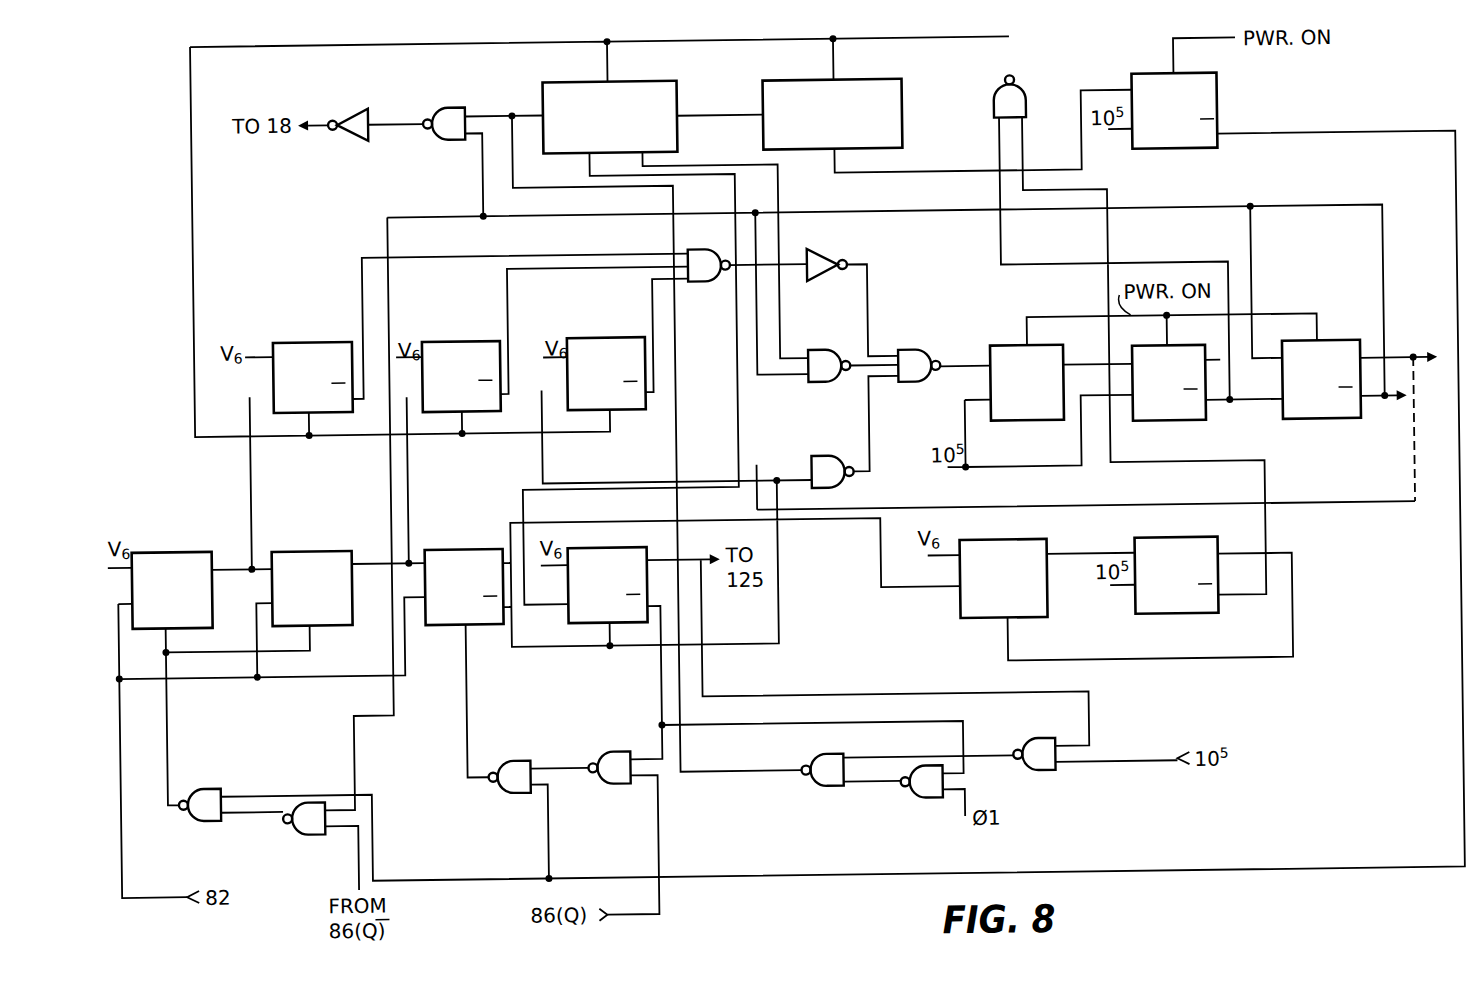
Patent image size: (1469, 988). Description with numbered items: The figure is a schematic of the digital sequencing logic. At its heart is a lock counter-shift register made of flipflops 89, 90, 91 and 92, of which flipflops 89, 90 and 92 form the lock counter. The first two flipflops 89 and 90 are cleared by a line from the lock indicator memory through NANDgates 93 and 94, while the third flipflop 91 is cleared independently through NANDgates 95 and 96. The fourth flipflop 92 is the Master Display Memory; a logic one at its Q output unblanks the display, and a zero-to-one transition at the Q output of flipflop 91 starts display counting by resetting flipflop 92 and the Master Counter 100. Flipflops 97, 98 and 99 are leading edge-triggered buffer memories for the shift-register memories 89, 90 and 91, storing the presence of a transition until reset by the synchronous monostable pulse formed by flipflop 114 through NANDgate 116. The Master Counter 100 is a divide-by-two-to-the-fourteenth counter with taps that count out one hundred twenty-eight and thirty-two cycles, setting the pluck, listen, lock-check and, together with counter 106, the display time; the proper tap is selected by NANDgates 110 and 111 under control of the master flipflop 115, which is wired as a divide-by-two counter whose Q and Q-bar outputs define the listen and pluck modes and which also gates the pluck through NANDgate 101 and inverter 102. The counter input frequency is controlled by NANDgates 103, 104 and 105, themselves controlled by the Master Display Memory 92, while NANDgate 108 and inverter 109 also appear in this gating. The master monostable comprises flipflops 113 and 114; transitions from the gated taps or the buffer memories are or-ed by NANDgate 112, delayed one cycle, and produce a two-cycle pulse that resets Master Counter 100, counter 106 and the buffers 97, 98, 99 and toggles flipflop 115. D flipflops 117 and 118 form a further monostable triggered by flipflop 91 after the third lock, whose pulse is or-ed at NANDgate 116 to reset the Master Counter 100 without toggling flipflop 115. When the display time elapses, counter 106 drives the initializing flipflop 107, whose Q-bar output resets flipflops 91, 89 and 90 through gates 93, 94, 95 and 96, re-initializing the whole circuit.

The flipflop 89 is at (211, 609).
The flipflop 90 is at (340, 610).
The third flipflop 91 is at (445, 613).
The fourth flipflop (Master Display Memory) 92 is at (613, 546).
The NANDgate 93 is at (214, 816).
The NANDgate 94 is at (298, 831).
The NANDgate 95 is at (522, 792).
The NANDgate 96 is at (626, 783).
The shift register buffer memory flipflop 97 is at (326, 337).
The shift register buffer memory flipflop 98 is at (480, 338).
The shift register buffer memory flipflop 99 is at (634, 336).
The Master Counter 100 is at (678, 59).
The NANDgate 101 is at (484, 67).
The inverter 102 is at (347, 103).
The NANDgate 103 is at (1045, 740).
The NANDgate 104 is at (918, 800).
The NANDgate 105 is at (828, 790).
The counter 106 is at (903, 92).
The initializing flipflop 107 is at (1214, 98).
The NANDgate 108 is at (706, 284).
The inverter 109 is at (837, 272).
The NANDgate 110 is at (830, 386).
The NANDgate 111 is at (846, 489).
The NANDgate 112 is at (912, 386).
The master monostable flipflop 113 is at (1030, 424).
The Master Monostable flipflop 114 is at (1160, 426).
The master flipflop 115 is at (1328, 426).
The NANDgate 116 is at (1024, 100).
The D flipflop 117 is at (1058, 598).
The D flipflop 118 is at (1200, 608).